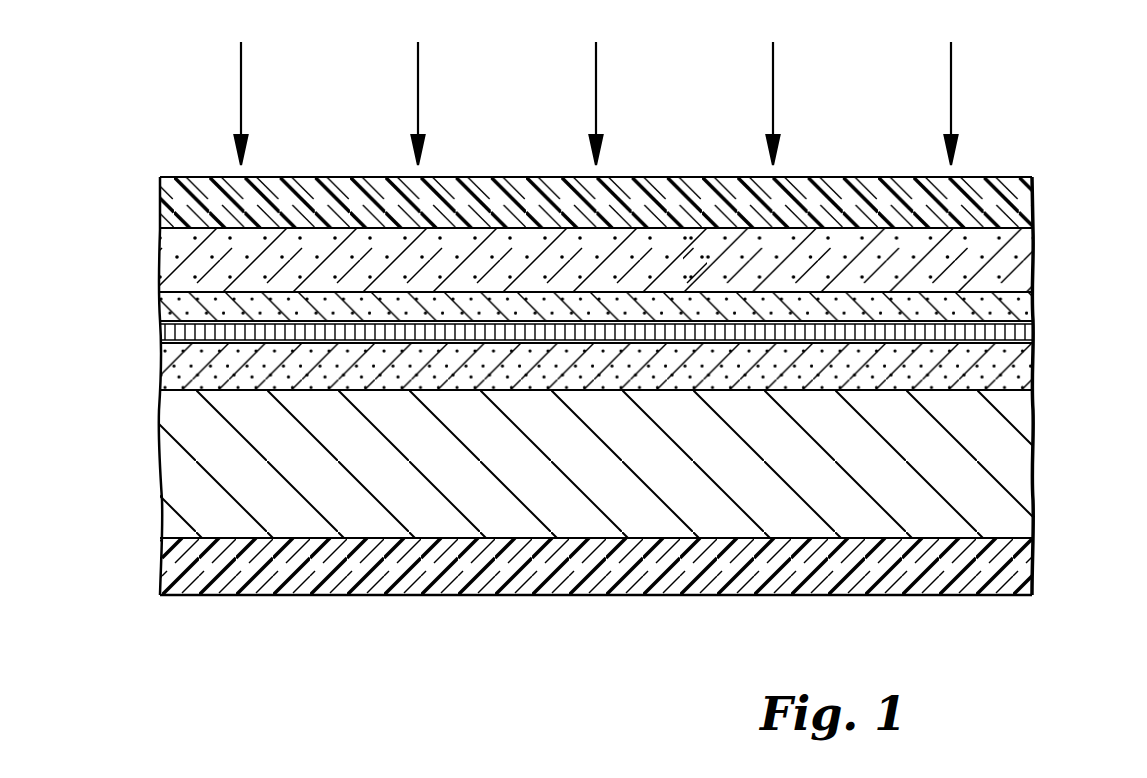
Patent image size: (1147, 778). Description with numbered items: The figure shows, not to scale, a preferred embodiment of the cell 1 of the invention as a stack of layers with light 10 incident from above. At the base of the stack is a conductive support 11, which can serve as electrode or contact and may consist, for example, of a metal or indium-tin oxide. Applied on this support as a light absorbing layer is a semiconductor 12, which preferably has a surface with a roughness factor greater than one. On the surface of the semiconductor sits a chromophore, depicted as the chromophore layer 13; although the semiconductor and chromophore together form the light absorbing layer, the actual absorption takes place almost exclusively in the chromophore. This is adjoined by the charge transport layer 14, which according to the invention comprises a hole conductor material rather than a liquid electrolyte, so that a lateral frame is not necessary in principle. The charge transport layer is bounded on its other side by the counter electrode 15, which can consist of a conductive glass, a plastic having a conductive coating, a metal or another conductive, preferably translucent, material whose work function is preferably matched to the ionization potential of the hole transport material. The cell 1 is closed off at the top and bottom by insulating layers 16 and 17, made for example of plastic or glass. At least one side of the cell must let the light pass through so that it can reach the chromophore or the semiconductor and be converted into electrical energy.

The cell 1 is at (113, 177).
The exposing radiation 10 is at (700, 105).
The conductive support 11 is at (1022, 450).
The semiconductor 12 is at (1030, 365).
The chromophore layer 13 is at (1025, 325).
The charge transport layer 14 is at (1022, 305).
The counter electrode 15 is at (1020, 256).
The insulating layer 16 is at (1022, 200).
The insulating layer 17 is at (1032, 560).